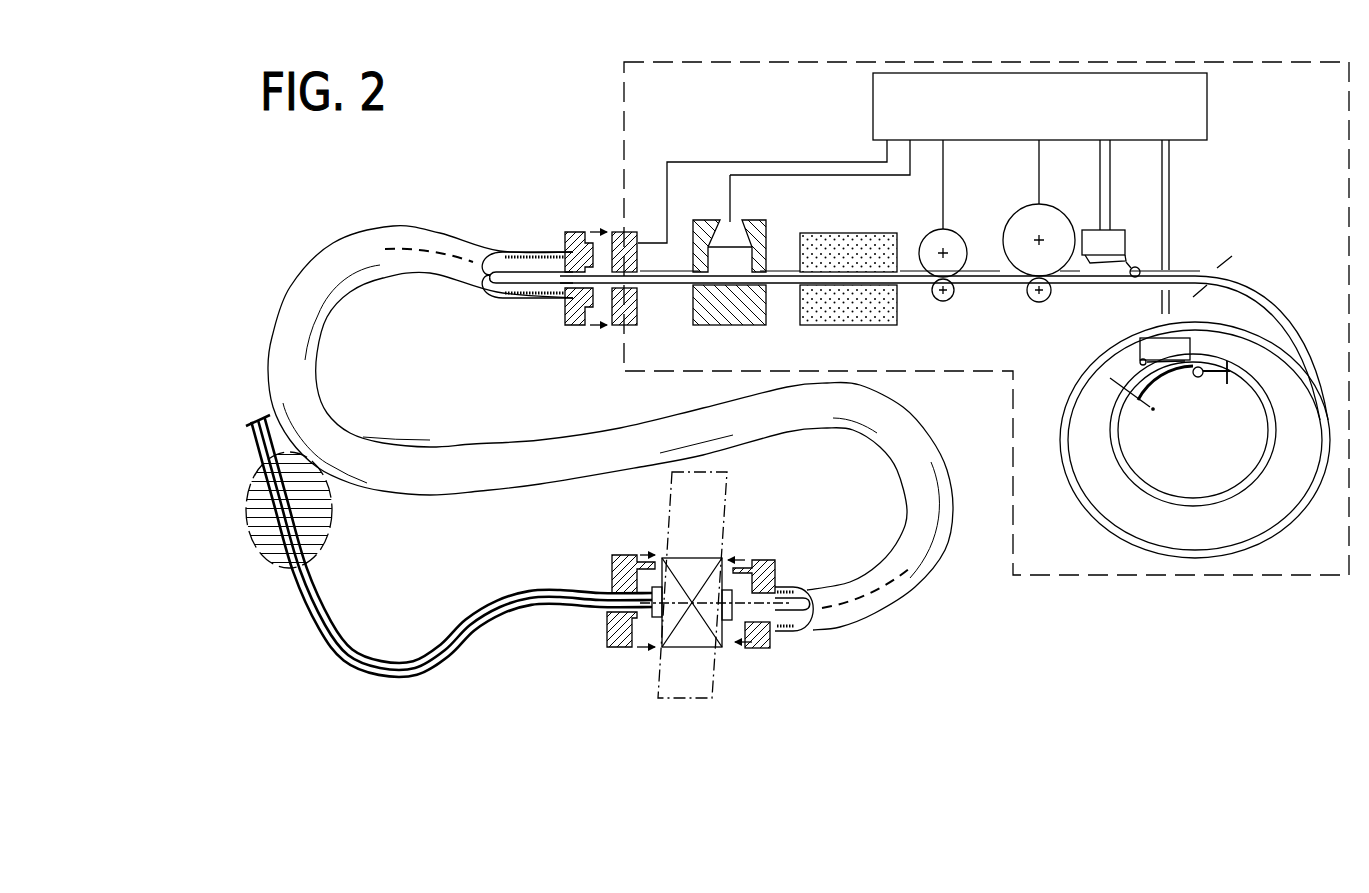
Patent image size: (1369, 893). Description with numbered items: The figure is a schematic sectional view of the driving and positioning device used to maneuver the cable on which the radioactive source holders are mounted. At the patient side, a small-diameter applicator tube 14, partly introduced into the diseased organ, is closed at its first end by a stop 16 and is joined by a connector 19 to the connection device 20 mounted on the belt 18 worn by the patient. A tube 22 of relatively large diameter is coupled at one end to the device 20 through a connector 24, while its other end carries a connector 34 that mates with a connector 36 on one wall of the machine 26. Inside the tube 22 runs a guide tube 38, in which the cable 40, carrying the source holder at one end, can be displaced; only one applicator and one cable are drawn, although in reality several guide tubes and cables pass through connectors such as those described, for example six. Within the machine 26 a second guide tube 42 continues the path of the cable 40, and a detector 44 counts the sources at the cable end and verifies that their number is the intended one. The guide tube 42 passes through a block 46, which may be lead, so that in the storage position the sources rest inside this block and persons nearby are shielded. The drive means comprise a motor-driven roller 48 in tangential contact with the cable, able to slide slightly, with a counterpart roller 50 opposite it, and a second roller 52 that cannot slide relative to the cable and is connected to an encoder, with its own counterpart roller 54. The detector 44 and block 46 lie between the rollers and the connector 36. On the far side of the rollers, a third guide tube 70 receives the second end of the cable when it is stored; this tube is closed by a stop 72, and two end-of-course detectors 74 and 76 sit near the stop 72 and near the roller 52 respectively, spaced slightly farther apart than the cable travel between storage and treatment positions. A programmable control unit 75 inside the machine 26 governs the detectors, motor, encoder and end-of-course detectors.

The applicator 14 is at (384, 662).
The stop 16 is at (266, 416).
The belt 18 is at (728, 480).
The connector 19 is at (618, 553).
The connection device 20 is at (738, 652).
The tube 22 is at (928, 550).
The connector 24 is at (762, 565).
The machine 26 is at (619, 104).
The connector 34 is at (567, 230).
The connector 36 is at (623, 318).
The guide tube 38 is at (552, 256).
The cable 40 is at (512, 292).
The second guide tube 42 is at (786, 274).
The detector 44 is at (731, 237).
The block 46 is at (852, 241).
The motor-driven roller 48 is at (930, 243).
The counterpart roller 50 is at (942, 302).
The second roller 52 is at (1015, 228).
The counterpart roller 54 is at (1037, 303).
The third guide tube 70 is at (1268, 300).
The stop 72 is at (1230, 378).
The end-of-course detector 74 is at (1150, 345).
The programmable control unit 75 is at (1200, 118).
The end-of-course detector 76 is at (1118, 242).